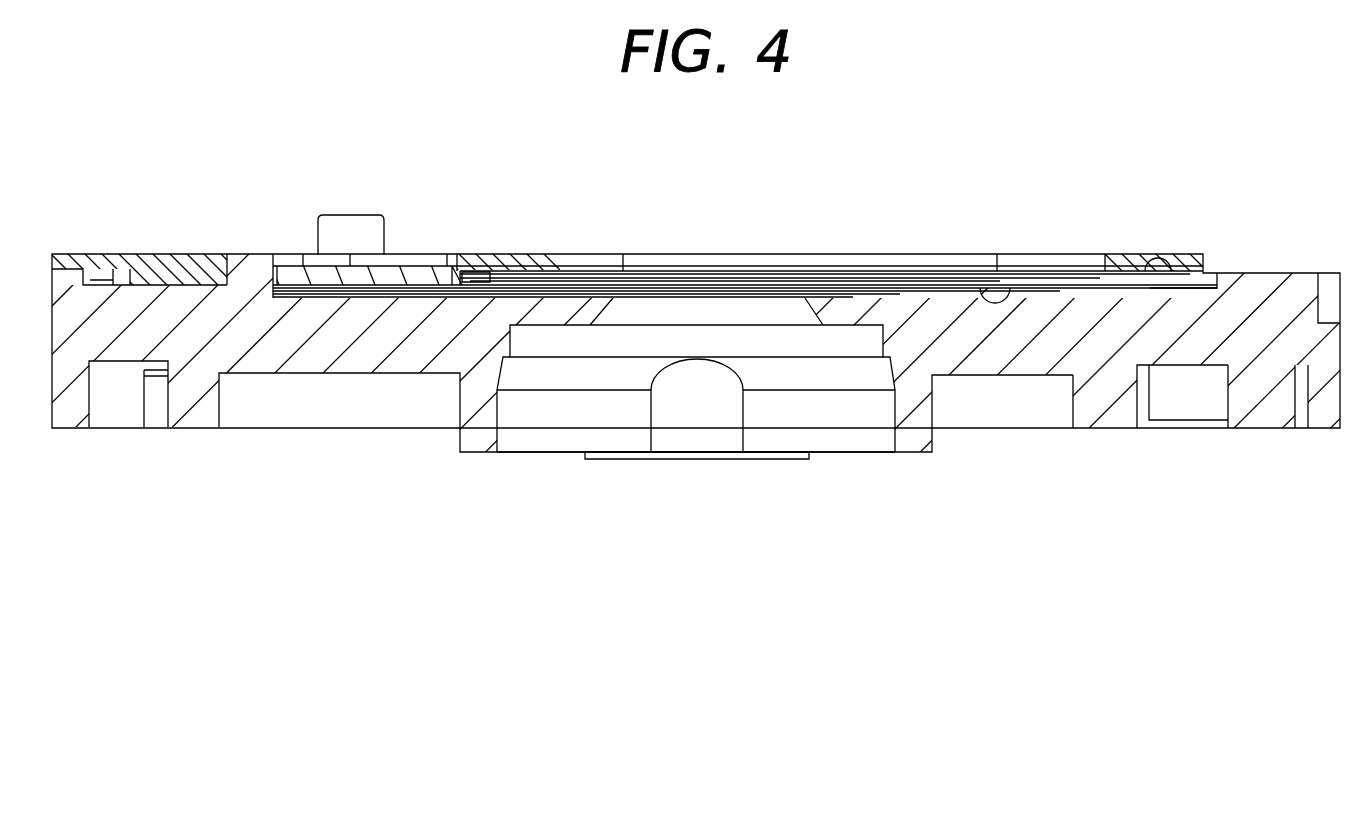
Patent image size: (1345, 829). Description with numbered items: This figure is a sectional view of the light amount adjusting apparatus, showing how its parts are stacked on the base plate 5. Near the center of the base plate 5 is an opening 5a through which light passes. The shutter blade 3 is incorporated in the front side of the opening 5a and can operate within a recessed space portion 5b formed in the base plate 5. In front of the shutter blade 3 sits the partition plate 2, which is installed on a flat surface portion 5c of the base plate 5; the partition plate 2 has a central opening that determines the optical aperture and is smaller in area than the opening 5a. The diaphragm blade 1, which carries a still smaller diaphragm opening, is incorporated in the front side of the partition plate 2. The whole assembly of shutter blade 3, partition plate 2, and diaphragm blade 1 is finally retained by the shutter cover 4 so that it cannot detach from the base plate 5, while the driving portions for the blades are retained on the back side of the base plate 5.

The diaphragm blade 1 is at (778, 272).
The partition plate 2 is at (1092, 278).
The shutter blade 3 is at (333, 293).
The shutter cover 4 is at (1062, 265).
The base plate 5 is at (808, 347).
The opening 5a is at (680, 303).
The recessed space portion 5b is at (868, 293).
The flat surface portion 5c is at (980, 297).